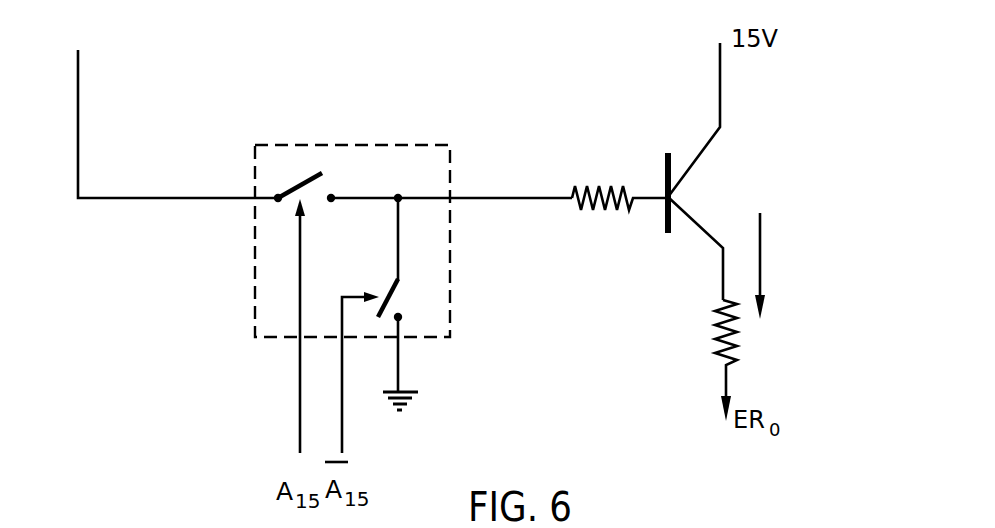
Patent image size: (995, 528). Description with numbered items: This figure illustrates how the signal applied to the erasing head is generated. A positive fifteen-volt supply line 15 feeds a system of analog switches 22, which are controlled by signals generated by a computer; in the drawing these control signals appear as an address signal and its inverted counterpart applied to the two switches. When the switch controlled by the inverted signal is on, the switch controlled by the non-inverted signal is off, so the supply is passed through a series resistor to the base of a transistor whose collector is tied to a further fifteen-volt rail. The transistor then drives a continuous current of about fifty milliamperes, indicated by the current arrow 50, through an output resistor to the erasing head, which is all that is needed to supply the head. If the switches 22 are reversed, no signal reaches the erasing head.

The analog switches 22 is at (400, 145).
The +15V supply line 15 is at (178, 111).
The 50mA current arrow 50 is at (816, 266).